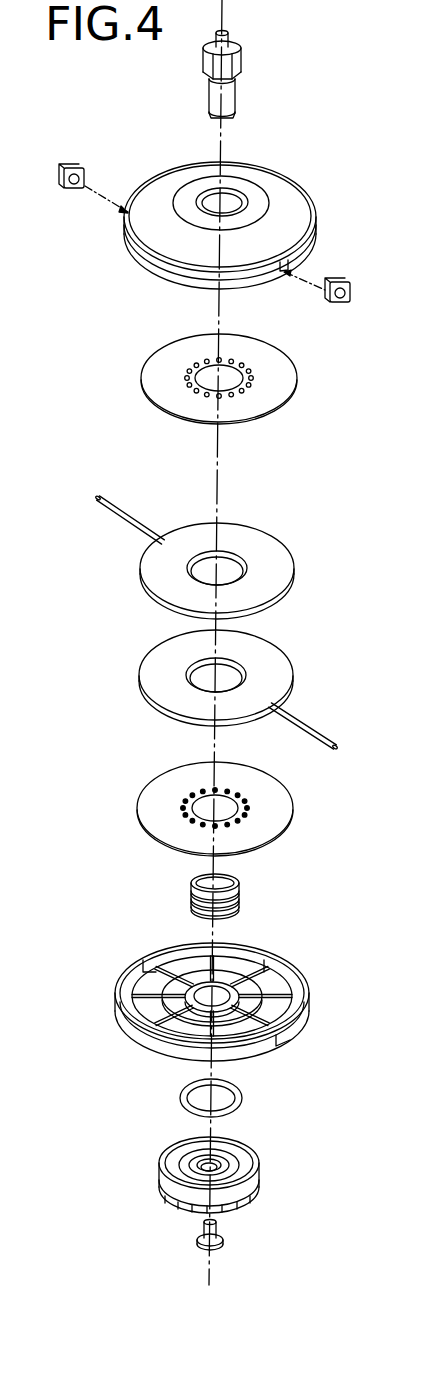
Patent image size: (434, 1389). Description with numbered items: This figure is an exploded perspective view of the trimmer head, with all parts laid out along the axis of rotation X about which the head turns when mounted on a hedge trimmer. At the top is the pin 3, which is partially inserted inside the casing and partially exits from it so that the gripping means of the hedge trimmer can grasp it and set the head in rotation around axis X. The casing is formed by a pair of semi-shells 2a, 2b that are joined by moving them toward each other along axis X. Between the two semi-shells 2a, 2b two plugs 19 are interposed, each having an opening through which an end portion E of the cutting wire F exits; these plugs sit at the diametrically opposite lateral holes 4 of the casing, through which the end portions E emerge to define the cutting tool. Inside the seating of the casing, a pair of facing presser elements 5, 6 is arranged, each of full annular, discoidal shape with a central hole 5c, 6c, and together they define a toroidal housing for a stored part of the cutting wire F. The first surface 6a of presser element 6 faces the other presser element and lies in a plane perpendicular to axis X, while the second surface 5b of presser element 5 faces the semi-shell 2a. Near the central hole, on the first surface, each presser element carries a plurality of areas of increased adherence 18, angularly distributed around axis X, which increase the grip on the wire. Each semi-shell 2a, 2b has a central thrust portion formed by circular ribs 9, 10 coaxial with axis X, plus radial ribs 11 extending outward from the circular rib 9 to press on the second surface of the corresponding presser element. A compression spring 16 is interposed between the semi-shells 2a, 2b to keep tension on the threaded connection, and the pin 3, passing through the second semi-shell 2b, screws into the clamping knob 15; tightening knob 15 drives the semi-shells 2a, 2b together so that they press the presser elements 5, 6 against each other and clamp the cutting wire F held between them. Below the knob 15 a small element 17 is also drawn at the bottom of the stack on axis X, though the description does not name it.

The pin 3 is at (228, 95).
The first semi-shell 2a is at (285, 197).
The plug 19 is at (64, 172).
The lateral hole 4 is at (86, 180).
The presser element 5 is at (233, 368).
The second surface 5b is at (152, 372).
The central hole 5c is at (232, 364).
The axis of rotation X is at (221, 482).
The end portion E is at (97, 501).
The cutting wire F is at (300, 568).
The presser element 6 is at (232, 791).
The first surface 6a is at (160, 793).
The central hole 6c is at (207, 795).
The areas of increased adherence 18 is at (213, 828).
The compression spring 16 is at (242, 898).
The second semi-shell 2b is at (237, 1008).
The radial ribs 11 is at (268, 977).
The circular rib 9 is at (178, 993).
The circular rib 10 is at (185, 1032).
The clamping knob 15 is at (258, 1165).
The screw 17 is at (222, 1234).